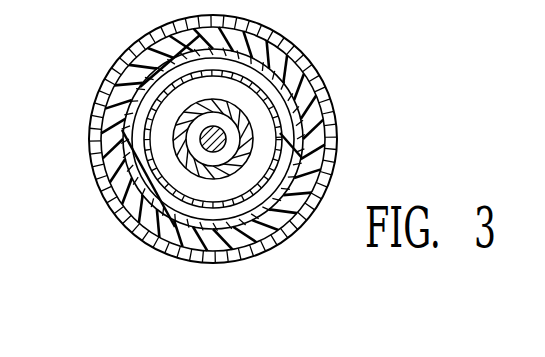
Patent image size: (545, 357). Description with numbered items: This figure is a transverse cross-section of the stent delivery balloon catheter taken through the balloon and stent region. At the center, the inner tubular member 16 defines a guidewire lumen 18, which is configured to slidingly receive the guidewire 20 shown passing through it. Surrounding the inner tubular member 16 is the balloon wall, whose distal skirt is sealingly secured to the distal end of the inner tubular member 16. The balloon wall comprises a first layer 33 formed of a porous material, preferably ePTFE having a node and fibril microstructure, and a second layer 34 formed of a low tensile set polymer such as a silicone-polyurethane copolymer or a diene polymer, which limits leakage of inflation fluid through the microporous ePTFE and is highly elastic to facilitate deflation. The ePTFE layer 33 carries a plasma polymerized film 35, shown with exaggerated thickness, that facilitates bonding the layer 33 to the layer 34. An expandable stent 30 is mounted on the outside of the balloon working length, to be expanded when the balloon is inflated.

The inner tubular member 16 is at (173, 123).
The guidewire lumen 18 is at (199, 140).
The guidewire 20 is at (200, 152).
The expandable stent 30 is at (275, 42).
The first layer 33 is at (302, 87).
The second layer 34 is at (290, 158).
The plasma polymerized film 35 is at (305, 127).